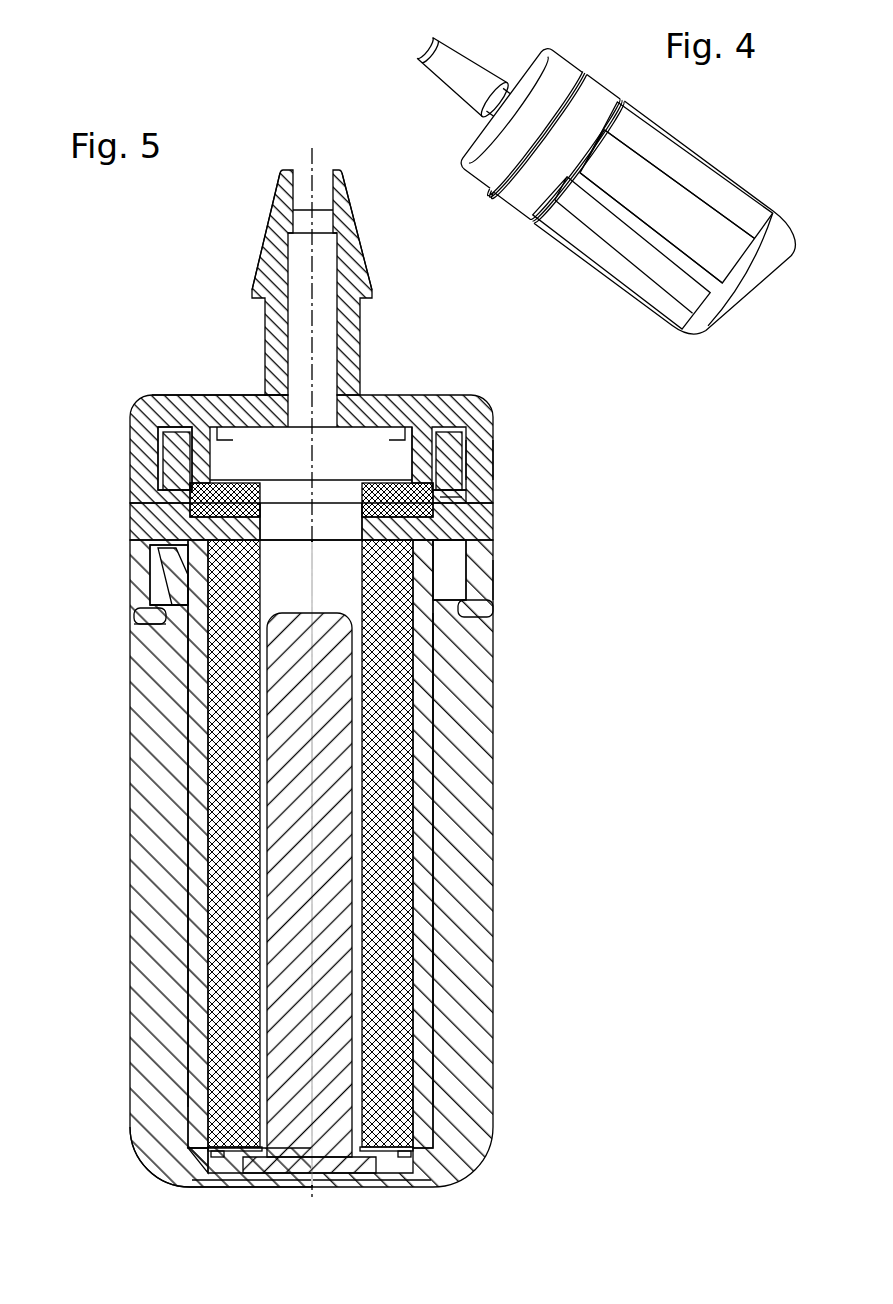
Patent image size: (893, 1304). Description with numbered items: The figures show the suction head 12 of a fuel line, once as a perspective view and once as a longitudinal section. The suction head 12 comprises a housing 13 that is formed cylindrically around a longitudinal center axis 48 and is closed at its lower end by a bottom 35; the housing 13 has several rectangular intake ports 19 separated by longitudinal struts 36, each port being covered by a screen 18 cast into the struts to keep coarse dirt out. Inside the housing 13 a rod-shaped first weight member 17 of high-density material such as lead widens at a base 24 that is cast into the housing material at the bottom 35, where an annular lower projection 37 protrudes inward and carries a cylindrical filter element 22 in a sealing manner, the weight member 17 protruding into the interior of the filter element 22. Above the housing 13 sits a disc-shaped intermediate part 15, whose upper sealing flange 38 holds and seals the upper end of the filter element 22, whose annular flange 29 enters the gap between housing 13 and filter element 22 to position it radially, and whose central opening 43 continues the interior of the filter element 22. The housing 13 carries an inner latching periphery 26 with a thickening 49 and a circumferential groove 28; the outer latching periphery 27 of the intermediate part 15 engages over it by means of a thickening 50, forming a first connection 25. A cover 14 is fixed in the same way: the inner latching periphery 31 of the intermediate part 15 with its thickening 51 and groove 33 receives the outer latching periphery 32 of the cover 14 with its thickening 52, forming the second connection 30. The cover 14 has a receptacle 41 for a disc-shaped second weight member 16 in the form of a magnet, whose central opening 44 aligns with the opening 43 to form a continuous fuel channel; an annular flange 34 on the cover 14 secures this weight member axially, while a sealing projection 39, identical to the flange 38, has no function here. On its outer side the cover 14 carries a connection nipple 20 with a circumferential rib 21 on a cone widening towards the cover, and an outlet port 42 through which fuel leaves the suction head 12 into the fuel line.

In FIG. 5, the suction head 12 is at (158, 285).
In FIG. 5, the housing 13 is at (480, 990).
In FIG. 4, the housing 13 is at (716, 342).
In FIG. 5, the cover 14 is at (395, 396).
In FIG. 4, the cover 14 is at (487, 165).
In FIG. 5, the intermediate part 15 is at (493, 555).
In FIG. 4, the intermediate part 15 is at (518, 193).
In FIG. 5, the second weight member 16 is at (175, 455).
In FIG. 5, the first weight member 17 is at (340, 835).
In FIG. 5, the screen 18 is at (185, 905).
In FIG. 4, the screen 18 is at (690, 200).
In FIG. 4, the intake ports 19 is at (712, 222).
In FIG. 5, the connection nipple 20 is at (265, 330).
In FIG. 4, the connection nipple 20 is at (500, 38).
In FIG. 5, the circumferential rib 21 is at (252, 285).
In FIG. 4, the circumferential rib 21 is at (448, 78).
In FIG. 5, the filter element 22 is at (390, 915).
In FIG. 5, the base 24 is at (372, 1180).
In FIG. 5, the first connection 25 is at (500, 583).
In FIG. 5, the inner latching periphery 26 is at (170, 568).
In FIG. 5, the outer latching periphery 27 is at (150, 603).
In FIG. 5, the circumferential groove 28 is at (145, 626).
In FIG. 5, the annular flange 29 is at (492, 612).
In FIG. 5, the second connection 30 is at (500, 465).
In FIG. 5, the inner latching periphery 31 is at (450, 470).
In FIG. 5, the outer latching periphery 32 is at (458, 490).
In FIG. 5, the groove 33 is at (470, 512).
In FIG. 5, the annular flange 34 is at (425, 455).
In FIG. 5, the bottom 35 is at (190, 1175).
In FIG. 5, the longitudinal struts 36 is at (165, 755).
In FIG. 4, the longitudinal struts 36 is at (663, 158).
In FIG. 5, the lower projection 37 is at (410, 1145).
In FIG. 5, the upper sealing flange 38 is at (250, 532).
In FIG. 5, the sealing projection 39 is at (195, 396).
In FIG. 5, the receptacle 41 is at (200, 500).
In FIG. 5, the outlet port 42 is at (302, 170).
In FIG. 5, the central opening 43 is at (345, 520).
In FIG. 5, the central opening 44 is at (275, 500).
In FIG. 5, the longitudinal center axis 48 is at (314, 170).
In FIG. 5, the thickening 49 is at (165, 572).
In FIG. 5, the thickening 50 is at (152, 622).
In FIG. 5, the thickening 51 is at (470, 468).
In FIG. 5, the thickening 52 is at (462, 500).